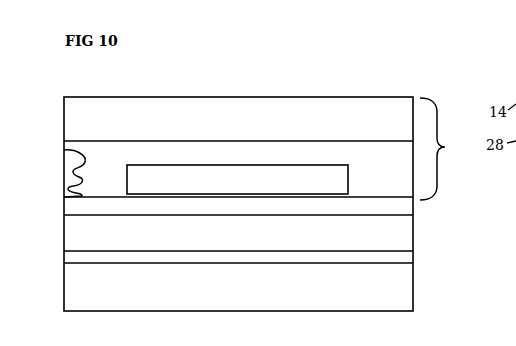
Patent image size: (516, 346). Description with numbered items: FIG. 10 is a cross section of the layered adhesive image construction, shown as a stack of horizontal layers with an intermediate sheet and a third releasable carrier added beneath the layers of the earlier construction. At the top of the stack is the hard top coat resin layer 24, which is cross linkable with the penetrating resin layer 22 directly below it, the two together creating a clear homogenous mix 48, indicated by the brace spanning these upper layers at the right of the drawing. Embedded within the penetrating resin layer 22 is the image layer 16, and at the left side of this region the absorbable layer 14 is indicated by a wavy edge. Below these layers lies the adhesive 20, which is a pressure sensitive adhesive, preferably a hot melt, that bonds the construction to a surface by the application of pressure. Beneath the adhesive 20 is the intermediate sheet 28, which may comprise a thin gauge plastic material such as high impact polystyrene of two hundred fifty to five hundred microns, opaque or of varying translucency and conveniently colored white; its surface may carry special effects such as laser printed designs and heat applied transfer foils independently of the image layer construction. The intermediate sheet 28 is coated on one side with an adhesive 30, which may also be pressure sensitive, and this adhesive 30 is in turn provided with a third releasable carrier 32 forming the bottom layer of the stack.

The absorbable layer 14 is at (70, 178).
The image layer 16 is at (335, 168).
The adhesive 20 is at (405, 204).
The penetrating resin layer 22 is at (240, 156).
The hard top coat resin layer 24 is at (315, 107).
The intermediate sheet 28 is at (100, 235).
The adhesive 30 is at (277, 257).
The third releasable carrier 32 is at (392, 280).
The homogenous mix 48 is at (442, 149).